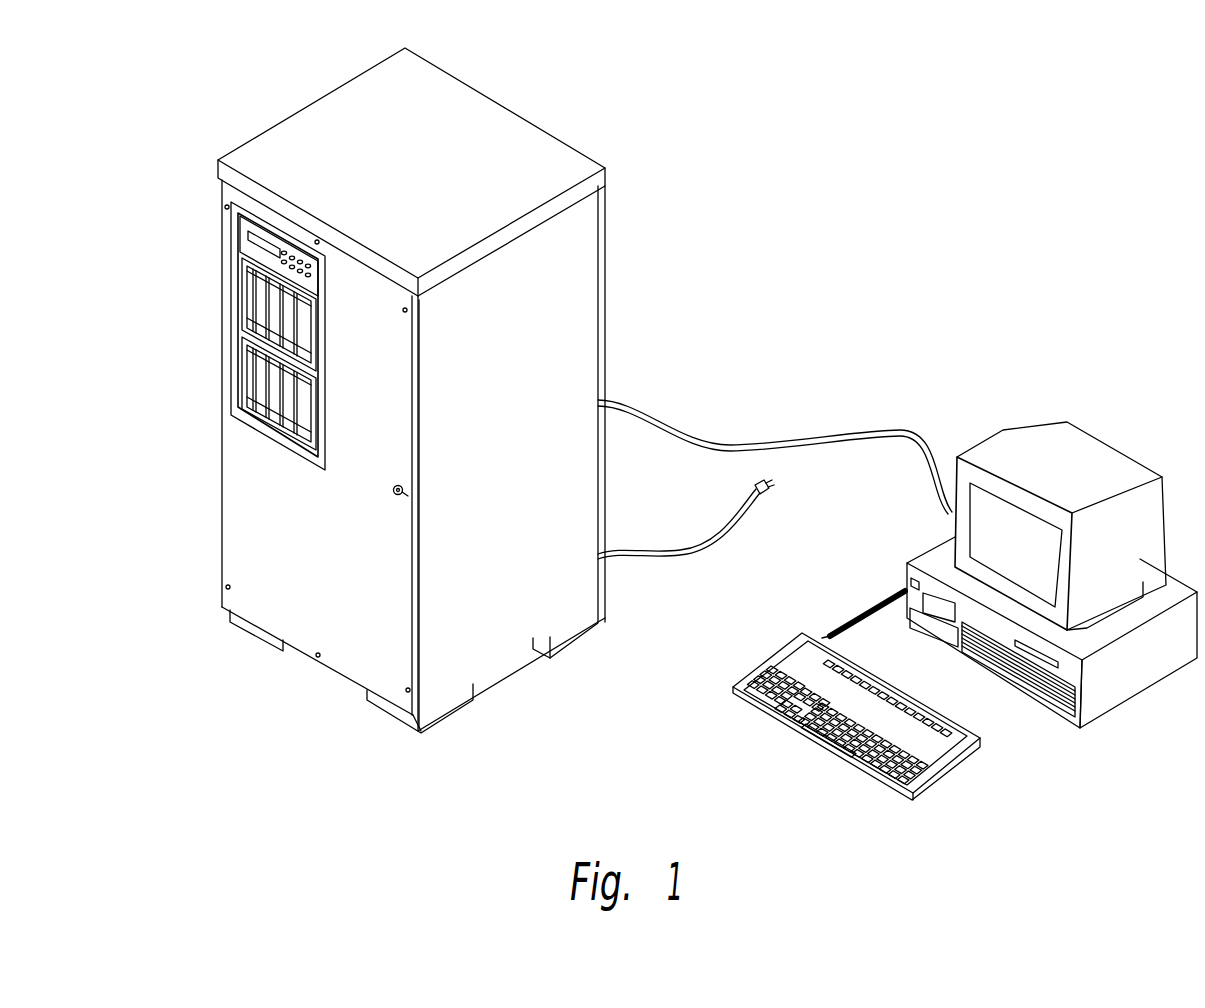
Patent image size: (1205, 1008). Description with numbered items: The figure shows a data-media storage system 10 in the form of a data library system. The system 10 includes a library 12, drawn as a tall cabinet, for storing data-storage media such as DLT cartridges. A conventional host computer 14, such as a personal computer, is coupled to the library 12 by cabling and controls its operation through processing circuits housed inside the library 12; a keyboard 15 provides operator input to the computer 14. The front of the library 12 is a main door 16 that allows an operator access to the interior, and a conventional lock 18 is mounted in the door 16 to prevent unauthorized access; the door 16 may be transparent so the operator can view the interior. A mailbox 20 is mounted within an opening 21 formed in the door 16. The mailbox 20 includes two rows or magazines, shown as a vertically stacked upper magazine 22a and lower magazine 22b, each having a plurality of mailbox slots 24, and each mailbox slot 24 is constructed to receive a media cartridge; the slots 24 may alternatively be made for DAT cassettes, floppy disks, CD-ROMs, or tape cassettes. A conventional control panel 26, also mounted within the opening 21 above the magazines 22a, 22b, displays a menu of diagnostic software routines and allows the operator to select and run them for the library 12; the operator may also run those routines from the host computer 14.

The data-media storage system 10 is at (722, 240).
The library 12 is at (335, 680).
The host computer 14 is at (1122, 392).
The keyboard 15 is at (953, 760).
The main door 16 is at (380, 682).
The lock 18 is at (403, 497).
The mailbox 20 is at (218, 330).
The opening 21 is at (240, 425).
The upper magazine 22a is at (317, 352).
The lower magazine 22b is at (313, 432).
The mailbox slot 24 is at (290, 410).
The control panel 26 is at (238, 237).